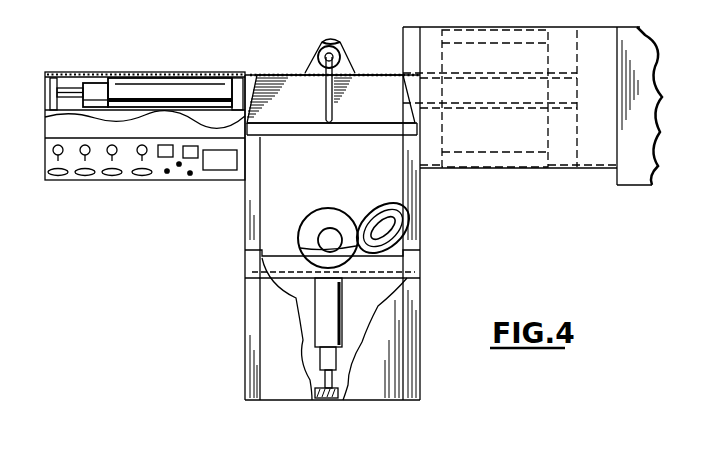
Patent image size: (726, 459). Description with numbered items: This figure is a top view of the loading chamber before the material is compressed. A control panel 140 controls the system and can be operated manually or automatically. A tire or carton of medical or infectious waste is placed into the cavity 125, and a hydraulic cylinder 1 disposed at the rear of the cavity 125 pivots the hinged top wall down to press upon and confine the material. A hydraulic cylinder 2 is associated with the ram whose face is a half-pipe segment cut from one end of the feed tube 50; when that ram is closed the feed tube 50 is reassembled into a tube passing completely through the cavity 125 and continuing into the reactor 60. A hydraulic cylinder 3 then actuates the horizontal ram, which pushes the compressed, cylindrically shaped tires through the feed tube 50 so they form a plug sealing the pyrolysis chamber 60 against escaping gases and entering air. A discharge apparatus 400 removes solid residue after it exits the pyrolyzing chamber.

The control panel 140 is at (162, 72).
The hydraulic cylinder 3 is at (146, 94).
The loading cavity 125 is at (290, 192).
The hydraulic cylinder 2 is at (330, 316).
The hydraulic cylinder 1 is at (376, 110).
The feed tube 50 is at (394, 72).
The pyrolysis chamber 60 is at (484, 32).
The discharge apparatus 400 is at (641, 180).